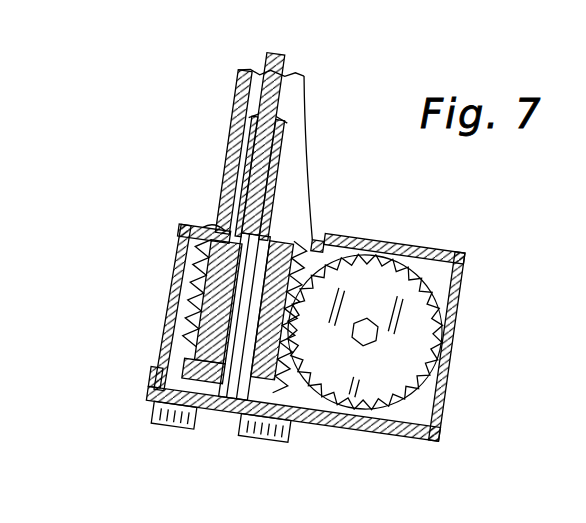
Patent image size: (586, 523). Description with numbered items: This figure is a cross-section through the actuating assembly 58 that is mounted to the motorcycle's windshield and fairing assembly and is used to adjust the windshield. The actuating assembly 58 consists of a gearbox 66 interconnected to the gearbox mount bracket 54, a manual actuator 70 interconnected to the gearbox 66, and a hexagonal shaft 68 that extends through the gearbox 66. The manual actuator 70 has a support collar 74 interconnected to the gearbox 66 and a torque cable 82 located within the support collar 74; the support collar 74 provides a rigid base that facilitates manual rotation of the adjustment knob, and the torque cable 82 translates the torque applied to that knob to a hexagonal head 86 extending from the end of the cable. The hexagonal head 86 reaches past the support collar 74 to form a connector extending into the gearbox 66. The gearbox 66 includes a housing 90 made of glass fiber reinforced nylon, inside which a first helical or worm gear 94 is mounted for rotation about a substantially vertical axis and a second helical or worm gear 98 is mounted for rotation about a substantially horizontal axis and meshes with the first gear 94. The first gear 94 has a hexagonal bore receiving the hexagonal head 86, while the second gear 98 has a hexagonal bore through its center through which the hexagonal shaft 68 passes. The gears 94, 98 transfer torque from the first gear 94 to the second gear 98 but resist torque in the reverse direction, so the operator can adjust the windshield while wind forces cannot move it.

The gearbox mount bracket 54 is at (228, 416).
The actuating assembly 58 is at (481, 249).
The gearbox 66 is at (469, 310).
The hexagonal shaft 68 is at (367, 318).
The manual actuator 70 is at (255, 216).
The support collar 74 is at (240, 87).
The torque cable 82 is at (287, 65).
The hexagonal head 86 is at (283, 234).
The housing 90 is at (392, 432).
The first helical or worm gear 94 is at (212, 312).
The second helical or worm gear 98 is at (433, 356).